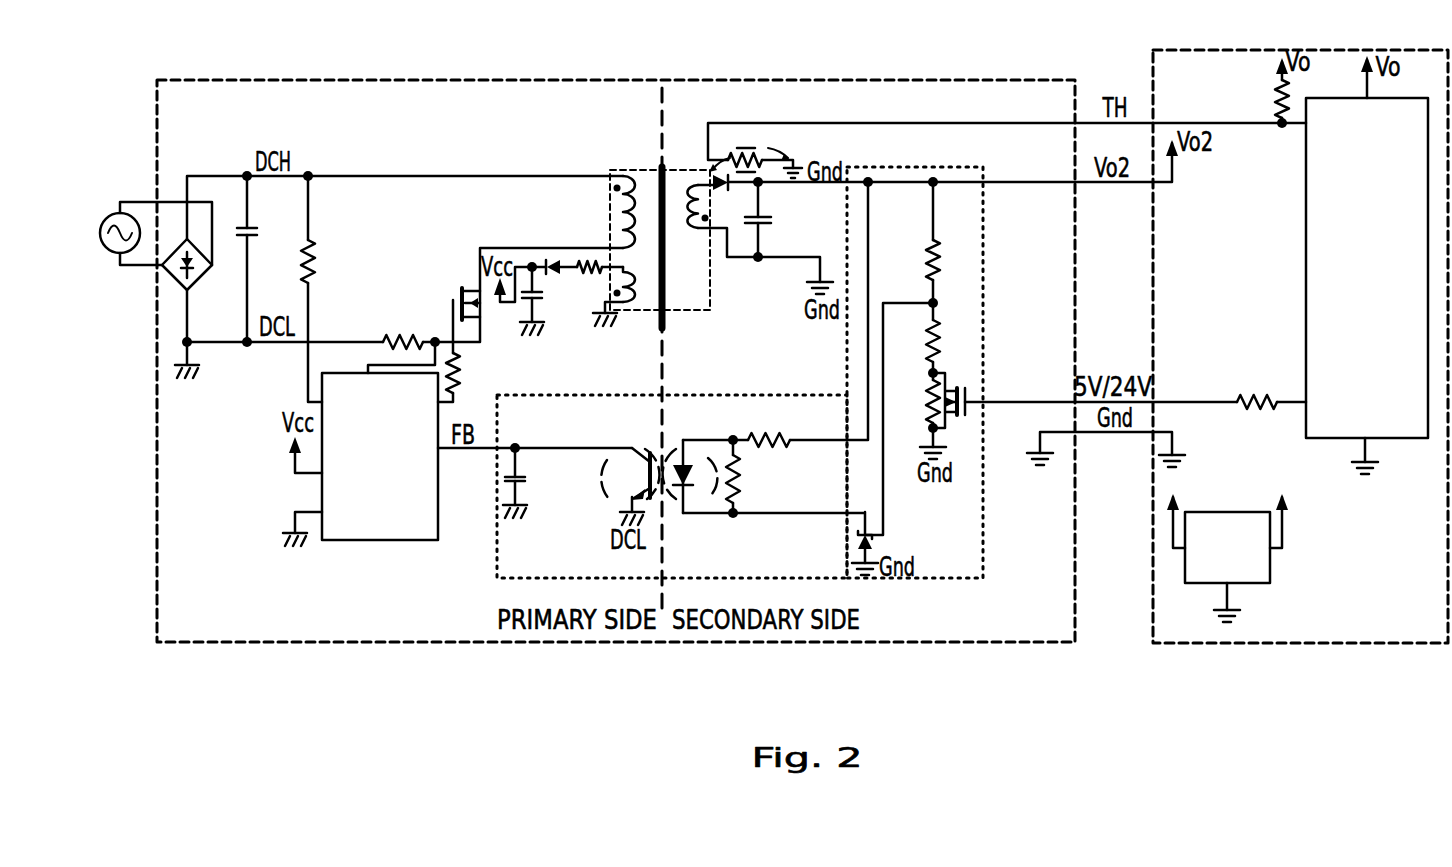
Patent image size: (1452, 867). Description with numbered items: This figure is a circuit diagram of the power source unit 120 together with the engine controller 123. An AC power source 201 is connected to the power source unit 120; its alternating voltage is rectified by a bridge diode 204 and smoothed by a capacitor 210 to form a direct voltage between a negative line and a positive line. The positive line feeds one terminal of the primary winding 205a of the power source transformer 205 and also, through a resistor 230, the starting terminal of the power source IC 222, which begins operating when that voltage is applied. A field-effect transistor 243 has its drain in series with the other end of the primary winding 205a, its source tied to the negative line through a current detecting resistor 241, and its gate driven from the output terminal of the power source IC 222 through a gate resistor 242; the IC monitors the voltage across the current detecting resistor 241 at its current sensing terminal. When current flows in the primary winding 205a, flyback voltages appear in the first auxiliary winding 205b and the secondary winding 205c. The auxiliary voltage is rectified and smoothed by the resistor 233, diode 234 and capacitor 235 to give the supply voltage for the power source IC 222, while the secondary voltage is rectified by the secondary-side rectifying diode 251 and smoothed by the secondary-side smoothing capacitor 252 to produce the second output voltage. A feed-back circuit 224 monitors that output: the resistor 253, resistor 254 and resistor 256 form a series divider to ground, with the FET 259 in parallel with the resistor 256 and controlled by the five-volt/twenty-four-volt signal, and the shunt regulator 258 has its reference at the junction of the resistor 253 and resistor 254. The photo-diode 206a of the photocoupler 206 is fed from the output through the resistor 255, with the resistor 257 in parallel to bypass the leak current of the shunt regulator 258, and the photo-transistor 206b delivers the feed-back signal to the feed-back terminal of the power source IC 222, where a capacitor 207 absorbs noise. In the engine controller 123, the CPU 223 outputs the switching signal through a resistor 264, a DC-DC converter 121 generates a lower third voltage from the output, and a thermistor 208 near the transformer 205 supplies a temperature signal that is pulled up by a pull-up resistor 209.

The power source unit 120 is at (144, 480).
The DC-DC converter 121 is at (1268, 583).
The engine controller 123 is at (1263, 648).
The AC power source 201 is at (112, 254).
The bridge diode 204 is at (205, 278).
The power source transformer 205 is at (627, 168).
The primary winding 205a is at (612, 199).
The first auxiliary winding 205b is at (612, 293).
The secondary winding 205c is at (678, 183).
The photocoupler 206 is at (613, 500).
The photo-diode 206a is at (672, 431).
The photo-transistor 206b is at (644, 447).
The capacitor 207 is at (519, 473).
The thermistor 208 is at (776, 152).
The pull-up resistor 209 is at (1271, 93).
The capacitor 210 is at (246, 221).
The power source IC 222 is at (396, 542).
The CPU 223 is at (1342, 443).
The feed-back circuit 224 is at (492, 596).
The resistor 230 is at (300, 238).
The resistor 233 is at (590, 258).
The diode 234 is at (555, 258).
The capacitor 235 is at (523, 303).
The current detecting resistor 241 is at (403, 338).
The gate resistor 242 is at (465, 378).
The field-effect transistor 243 is at (477, 285).
The secondary-side rectifying diode 251 is at (718, 193).
The secondary-side smoothing capacitor 252 is at (772, 208).
The resistor 253 is at (930, 271).
The resistor 254 is at (927, 350).
The resistor 255 is at (770, 426).
The resistor 256 is at (926, 414).
The resistor 257 is at (739, 472).
The shunt regulator 258 is at (854, 541).
The FET 259 is at (953, 378).
The resistor 264 is at (1237, 398).